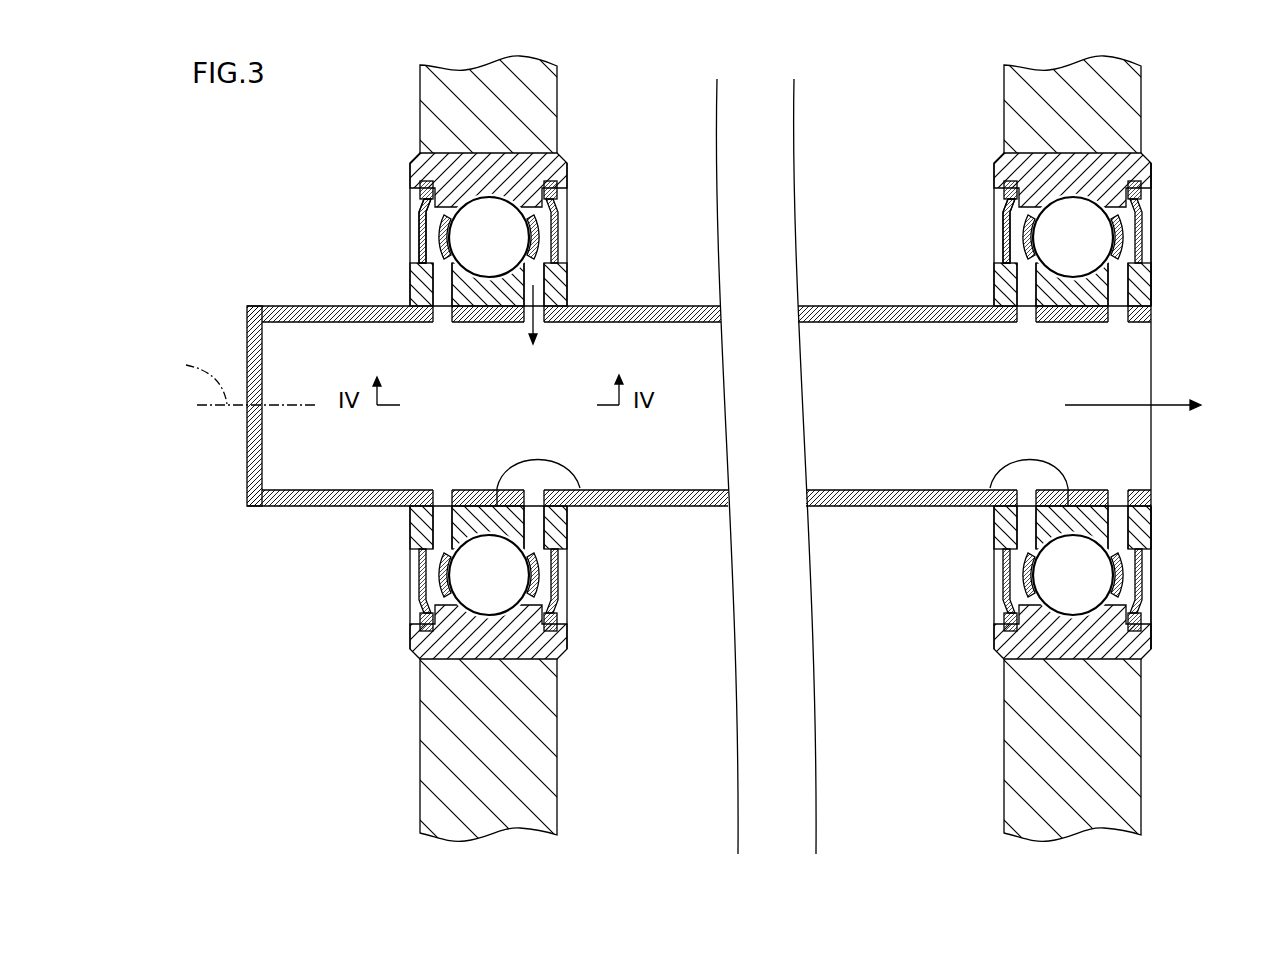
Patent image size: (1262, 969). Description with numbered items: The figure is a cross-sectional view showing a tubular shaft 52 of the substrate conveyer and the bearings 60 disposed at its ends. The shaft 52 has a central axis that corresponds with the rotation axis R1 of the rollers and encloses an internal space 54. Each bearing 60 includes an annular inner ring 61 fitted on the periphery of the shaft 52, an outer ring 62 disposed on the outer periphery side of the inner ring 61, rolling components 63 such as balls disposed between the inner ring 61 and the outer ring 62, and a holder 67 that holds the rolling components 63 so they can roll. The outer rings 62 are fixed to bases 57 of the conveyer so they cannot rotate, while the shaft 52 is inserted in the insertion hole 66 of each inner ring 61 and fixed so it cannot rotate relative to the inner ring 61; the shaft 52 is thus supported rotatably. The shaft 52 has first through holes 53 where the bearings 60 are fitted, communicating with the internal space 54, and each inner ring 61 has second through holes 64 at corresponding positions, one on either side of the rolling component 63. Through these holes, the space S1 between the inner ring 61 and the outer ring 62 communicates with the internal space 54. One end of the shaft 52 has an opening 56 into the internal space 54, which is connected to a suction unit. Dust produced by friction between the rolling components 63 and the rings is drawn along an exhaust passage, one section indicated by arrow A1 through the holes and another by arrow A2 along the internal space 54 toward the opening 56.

The shaft 52 is at (286, 507).
The first through hole 53 is at (538, 312).
The internal space 54 is at (680, 492).
The opening 56 is at (1134, 488).
The base 57 is at (530, 746).
The bearing 60 is at (404, 151).
The inner ring 61 is at (413, 273).
The outer ring 62 is at (522, 167).
The rolling component 63 is at (493, 237).
The second through hole 64 is at (438, 296).
The insertion hole 66 is at (580, 490).
The holder 67 is at (553, 195).
The space S1 is at (425, 220).
The arrow A1 is at (535, 329).
The arrow A2 is at (1133, 393).
The rotation axis R1 is at (195, 380).